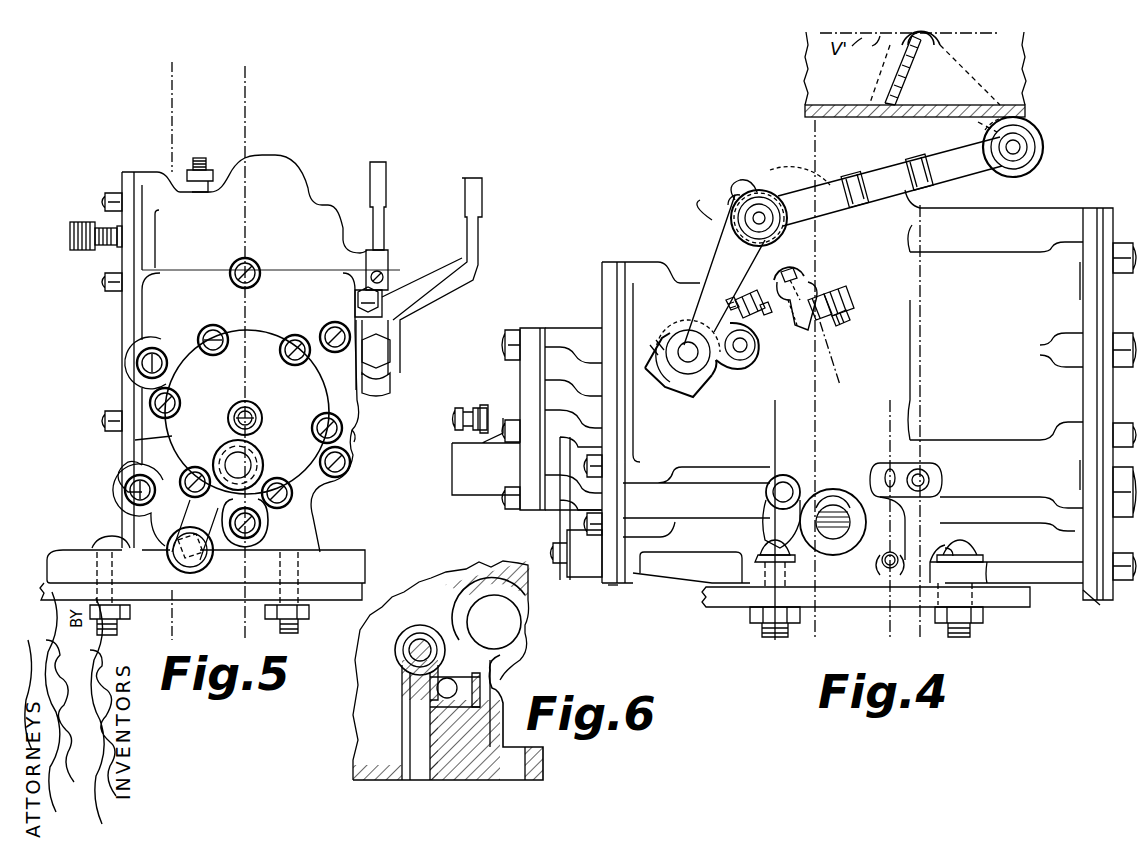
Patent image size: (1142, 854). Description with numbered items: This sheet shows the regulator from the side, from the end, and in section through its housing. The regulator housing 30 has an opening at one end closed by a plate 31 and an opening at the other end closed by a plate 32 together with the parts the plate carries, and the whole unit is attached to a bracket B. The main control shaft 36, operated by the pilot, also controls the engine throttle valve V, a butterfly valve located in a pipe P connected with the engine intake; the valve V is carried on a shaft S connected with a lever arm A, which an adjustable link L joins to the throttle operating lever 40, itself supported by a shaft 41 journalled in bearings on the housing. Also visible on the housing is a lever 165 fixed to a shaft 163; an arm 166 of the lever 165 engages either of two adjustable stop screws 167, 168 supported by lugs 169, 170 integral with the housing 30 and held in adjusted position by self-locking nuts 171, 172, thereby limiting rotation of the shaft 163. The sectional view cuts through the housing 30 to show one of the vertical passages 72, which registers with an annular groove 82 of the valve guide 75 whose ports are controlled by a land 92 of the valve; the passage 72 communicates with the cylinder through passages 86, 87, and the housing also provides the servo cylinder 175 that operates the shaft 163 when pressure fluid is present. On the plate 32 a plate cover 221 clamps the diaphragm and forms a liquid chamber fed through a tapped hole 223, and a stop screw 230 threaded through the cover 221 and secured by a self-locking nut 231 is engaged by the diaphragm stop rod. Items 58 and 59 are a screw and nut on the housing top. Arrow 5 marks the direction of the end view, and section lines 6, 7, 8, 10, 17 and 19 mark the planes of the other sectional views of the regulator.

In FIG. 5, the regulator housing 30 is at (306, 158).
In FIG. 6, the regulator housing 30 is at (500, 690).
In FIG. 4, the regulator housing 30 is at (1022, 212).
In FIG. 4, the plate 31 is at (1094, 596).
In FIG. 5, the plate 32 is at (352, 434).
In FIG. 4, the plate 32 is at (613, 580).
In FIG. 5, the main control shaft 36 is at (72, 241).
In FIG. 5, the throttle operating lever 40 is at (456, 272).
In FIG. 4, the throttle operating lever 40 is at (722, 230).
In FIG. 5, the shaft 41 is at (358, 392).
In FIG. 4, the shaft 41 is at (688, 345).
In FIG. 5, the screw 58 is at (198, 160).
In FIG. 5, the lock nut 59 is at (208, 180).
In FIG. 6, the vertical passage 72 is at (420, 717).
In FIG. 6, the valve guide 75 is at (405, 652).
In FIG. 6, the annular groove 82 is at (398, 637).
In FIG. 6, the passage 86 is at (482, 680).
In FIG. 6, the passage 87 is at (452, 695).
In FIG. 6, the land 92 is at (408, 660).
In FIG. 4, the shaft 163 is at (797, 272).
In FIG. 5, the lever 165 is at (374, 166).
In FIG. 4, the lever 165 is at (758, 168).
In FIG. 4, the arm 166 is at (804, 326).
In FIG. 4, the adjustable stop screw 167 is at (824, 285).
In FIG. 4, the adjustable stop screw 168 is at (754, 319).
In FIG. 4, the lug 169 is at (835, 318).
In FIG. 4, the lug 170 is at (744, 295).
In FIG. 4, the self-locking nut 171 is at (830, 288).
In FIG. 4, the self-locking nut 172 is at (712, 294).
In FIG. 6, the cylinder 175 is at (520, 622).
In FIG. 5, the plate cover 221 is at (168, 438).
In FIG. 4, the plate cover 221 is at (530, 510).
In FIG. 5, the tapped hole 223 is at (244, 465).
In FIG. 5, the stop screw 230 is at (236, 408).
In FIG. 4, the stop screw 230 is at (458, 413).
In FIG. 5, the self-locking nut 231 is at (256, 416).
In FIG. 4, the self-locking nut 231 is at (480, 404).
In FIG. 4, the arrow 5 is at (486, 368).
In FIG. 4, the section line 6— 6 is at (774, 435).
In FIG. 5, the section line 7 is at (245, 84).
In FIG. 5, the section line 8 is at (170, 76).
In FIG. 4, the section line 10 is at (814, 130).
In FIG. 4, the section line 17 is at (889, 410).
In FIG. 4, the section line 19 is at (920, 205).
In FIG. 5, the bracket B is at (46, 600).
In FIG. 4, the bracket B is at (696, 600).
In FIG. 4, the pipe P is at (808, 104).
In FIG. 4, the shaft S is at (944, 40).
In FIG. 4, the engine throttle valve V is at (896, 77).
In FIG. 4, the lever arm A is at (982, 74).
In FIG. 4, the adjustable link L is at (886, 170).